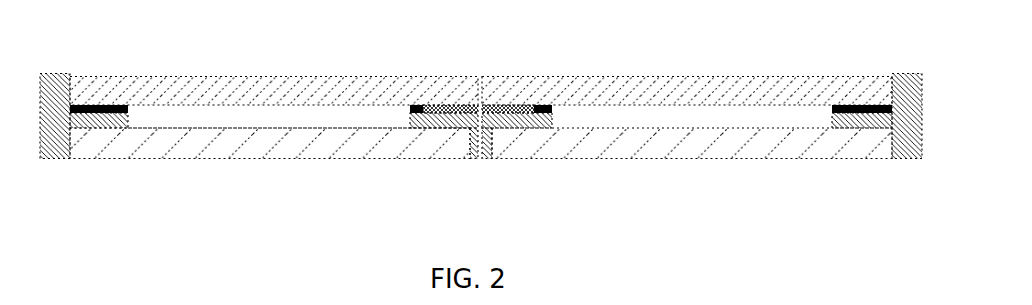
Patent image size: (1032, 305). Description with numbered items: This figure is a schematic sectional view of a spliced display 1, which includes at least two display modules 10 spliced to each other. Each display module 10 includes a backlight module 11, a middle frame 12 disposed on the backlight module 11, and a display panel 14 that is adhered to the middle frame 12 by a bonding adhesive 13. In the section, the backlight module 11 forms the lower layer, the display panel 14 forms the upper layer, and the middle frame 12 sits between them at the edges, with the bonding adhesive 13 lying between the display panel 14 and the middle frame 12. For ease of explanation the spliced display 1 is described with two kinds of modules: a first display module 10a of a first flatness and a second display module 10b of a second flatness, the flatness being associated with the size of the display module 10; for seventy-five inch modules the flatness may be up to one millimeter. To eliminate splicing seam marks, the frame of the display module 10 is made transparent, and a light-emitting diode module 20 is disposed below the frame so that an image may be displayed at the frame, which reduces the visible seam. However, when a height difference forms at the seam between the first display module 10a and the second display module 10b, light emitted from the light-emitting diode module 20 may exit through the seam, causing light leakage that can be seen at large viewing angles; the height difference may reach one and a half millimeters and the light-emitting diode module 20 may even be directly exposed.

The spliced display 1 is at (100, 45).
The display module 10 is at (481, 177).
The first display module 10a is at (254, 167).
The second display module 10b is at (678, 167).
The backlight module 11 is at (328, 148).
The middle frame 12 is at (63, 150).
The bonding adhesive 13 is at (125, 112).
The display panel 14 is at (168, 90).
The light-emitting diode module 20 is at (452, 122).